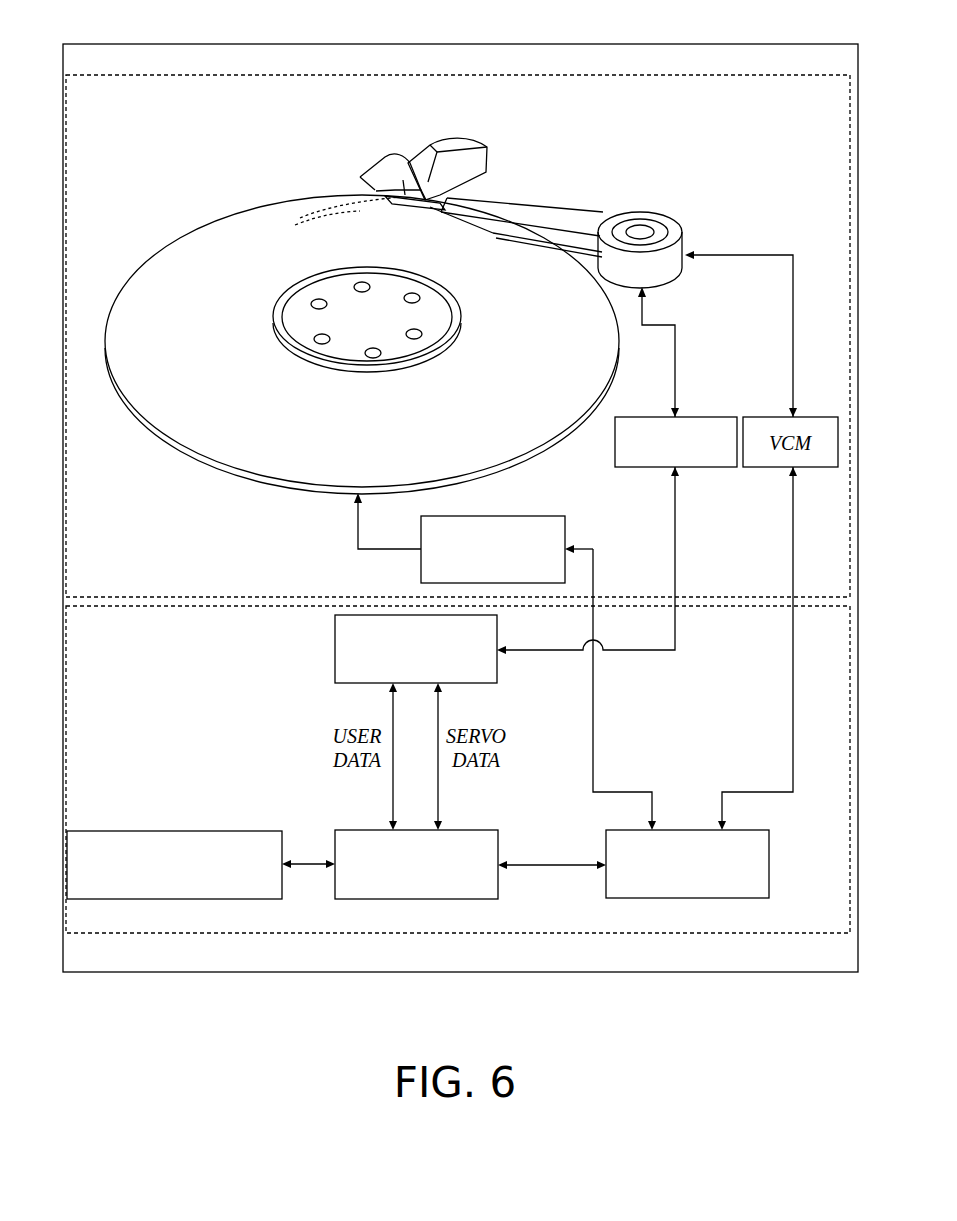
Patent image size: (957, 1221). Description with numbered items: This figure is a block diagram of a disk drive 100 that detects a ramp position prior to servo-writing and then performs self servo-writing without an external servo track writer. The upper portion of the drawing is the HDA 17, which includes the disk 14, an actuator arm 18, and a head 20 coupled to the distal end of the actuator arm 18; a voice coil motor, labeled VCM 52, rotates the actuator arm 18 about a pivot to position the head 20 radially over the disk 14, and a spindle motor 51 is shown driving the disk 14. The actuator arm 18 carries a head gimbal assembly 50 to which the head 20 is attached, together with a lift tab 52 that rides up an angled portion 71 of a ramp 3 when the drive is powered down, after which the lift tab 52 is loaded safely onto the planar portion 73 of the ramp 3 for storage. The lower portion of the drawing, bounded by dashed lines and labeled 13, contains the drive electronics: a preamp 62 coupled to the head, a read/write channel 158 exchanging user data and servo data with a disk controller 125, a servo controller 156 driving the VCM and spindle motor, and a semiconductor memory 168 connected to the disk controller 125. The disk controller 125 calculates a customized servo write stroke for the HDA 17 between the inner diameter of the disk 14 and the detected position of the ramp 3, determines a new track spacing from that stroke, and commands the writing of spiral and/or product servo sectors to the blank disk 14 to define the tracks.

The disk drive 100 is at (231, 44).
The HDA 17 is at (537, 75).
The printed circuit board assembly / electronics 13 is at (539, 933).
The disk 14 is at (197, 263).
The head 20 is at (383, 195).
The ramp 3 is at (554, 253).
The angled portion 71 is at (413, 175).
The planar portion 73 is at (430, 170).
The head gimbal assembly 50 is at (440, 163).
The lift tab 52 is at (408, 185).
The actuator arm 18 is at (535, 212).
The preamp 62 is at (665, 417).
The spindle motor 51 is at (538, 516).
The read/write channel 158 is at (335, 648).
The disk controller 125 is at (355, 830).
The servo controller 156 is at (620, 830).
The semiconductor memory 168 is at (170, 831).